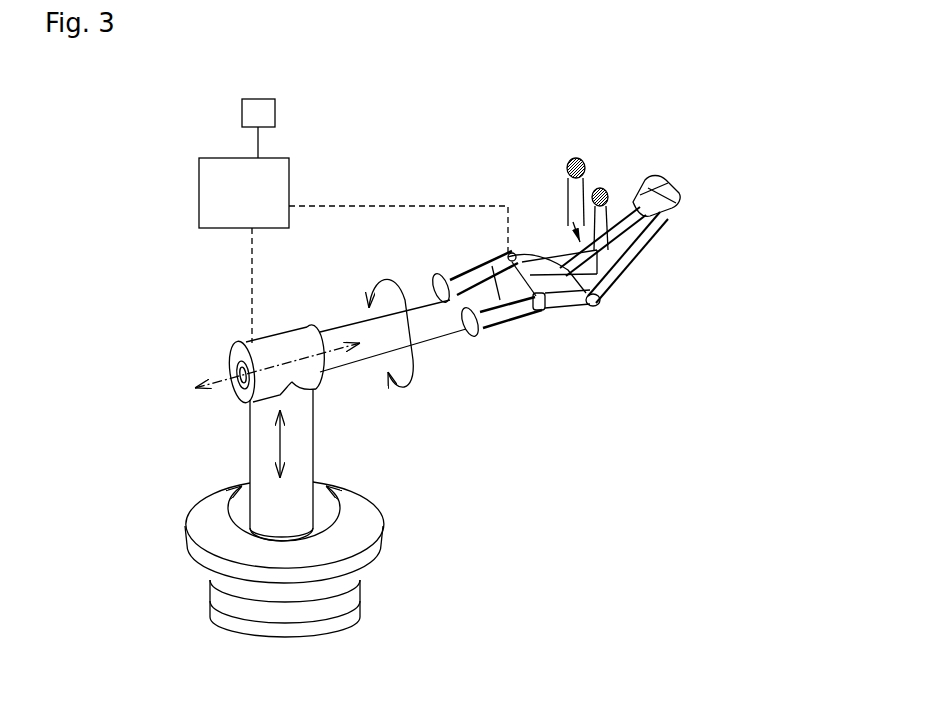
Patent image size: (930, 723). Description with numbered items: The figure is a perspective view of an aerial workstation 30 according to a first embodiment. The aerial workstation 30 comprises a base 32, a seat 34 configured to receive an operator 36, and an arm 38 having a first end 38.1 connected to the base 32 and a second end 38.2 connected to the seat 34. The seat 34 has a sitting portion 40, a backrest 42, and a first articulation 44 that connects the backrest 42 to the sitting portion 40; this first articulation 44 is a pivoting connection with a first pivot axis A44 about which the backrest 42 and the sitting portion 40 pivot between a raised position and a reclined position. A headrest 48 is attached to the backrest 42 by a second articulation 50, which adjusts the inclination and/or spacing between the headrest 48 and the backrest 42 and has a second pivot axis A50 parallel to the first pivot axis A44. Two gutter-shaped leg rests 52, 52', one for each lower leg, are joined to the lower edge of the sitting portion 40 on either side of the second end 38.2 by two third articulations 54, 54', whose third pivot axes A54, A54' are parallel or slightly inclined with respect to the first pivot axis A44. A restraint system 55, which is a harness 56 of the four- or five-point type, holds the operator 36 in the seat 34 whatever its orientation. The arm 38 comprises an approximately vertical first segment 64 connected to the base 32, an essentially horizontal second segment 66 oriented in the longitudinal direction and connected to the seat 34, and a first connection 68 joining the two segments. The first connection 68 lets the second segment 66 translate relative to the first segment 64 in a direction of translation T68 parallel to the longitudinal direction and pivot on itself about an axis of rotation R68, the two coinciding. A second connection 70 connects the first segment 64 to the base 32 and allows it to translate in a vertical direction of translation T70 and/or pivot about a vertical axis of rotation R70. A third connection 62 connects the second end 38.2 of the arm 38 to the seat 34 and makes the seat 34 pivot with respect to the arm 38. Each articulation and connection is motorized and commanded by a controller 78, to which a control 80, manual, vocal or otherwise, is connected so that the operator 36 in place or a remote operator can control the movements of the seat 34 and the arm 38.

The aerial workstation 30 is at (162, 297).
The base 32 is at (275, 563).
The seat 34 is at (621, 301).
The operator 36 is at (614, 210).
The arm 38 is at (316, 307).
The first end 38.1 is at (302, 515).
The second end 38.2 is at (480, 262).
The sitting portion 40 is at (583, 308).
The backrest 42 is at (622, 275).
The first articulation 44 is at (618, 315).
The headrest 48 is at (684, 201).
The second articulation 50 is at (715, 166).
The leg rest 52 is at (469, 230).
The leg rest 52' is at (500, 345).
The third articulation 54 is at (512, 180).
The third articulation 54' is at (555, 363).
The restraint system 55 is at (571, 162).
The harness 56 is at (657, 248).
The third connection 62 is at (523, 250).
The first segment 64 is at (277, 465).
The second segment 66 is at (395, 331).
The first connection 68 is at (257, 383).
The second connection 70 is at (208, 603).
The controller 78 is at (197, 178).
The control 80 is at (242, 112).
The first pivot axis A44 is at (551, 283).
The second pivot axis A50 is at (645, 240).
The third pivot axis A54 is at (484, 212).
The third pivot axis A54' is at (500, 382).
The axis of rotation R68 is at (419, 365).
The axis of rotation R70 is at (236, 503).
The direction of translation T68 is at (226, 390).
The direction of translation T70 is at (260, 438).